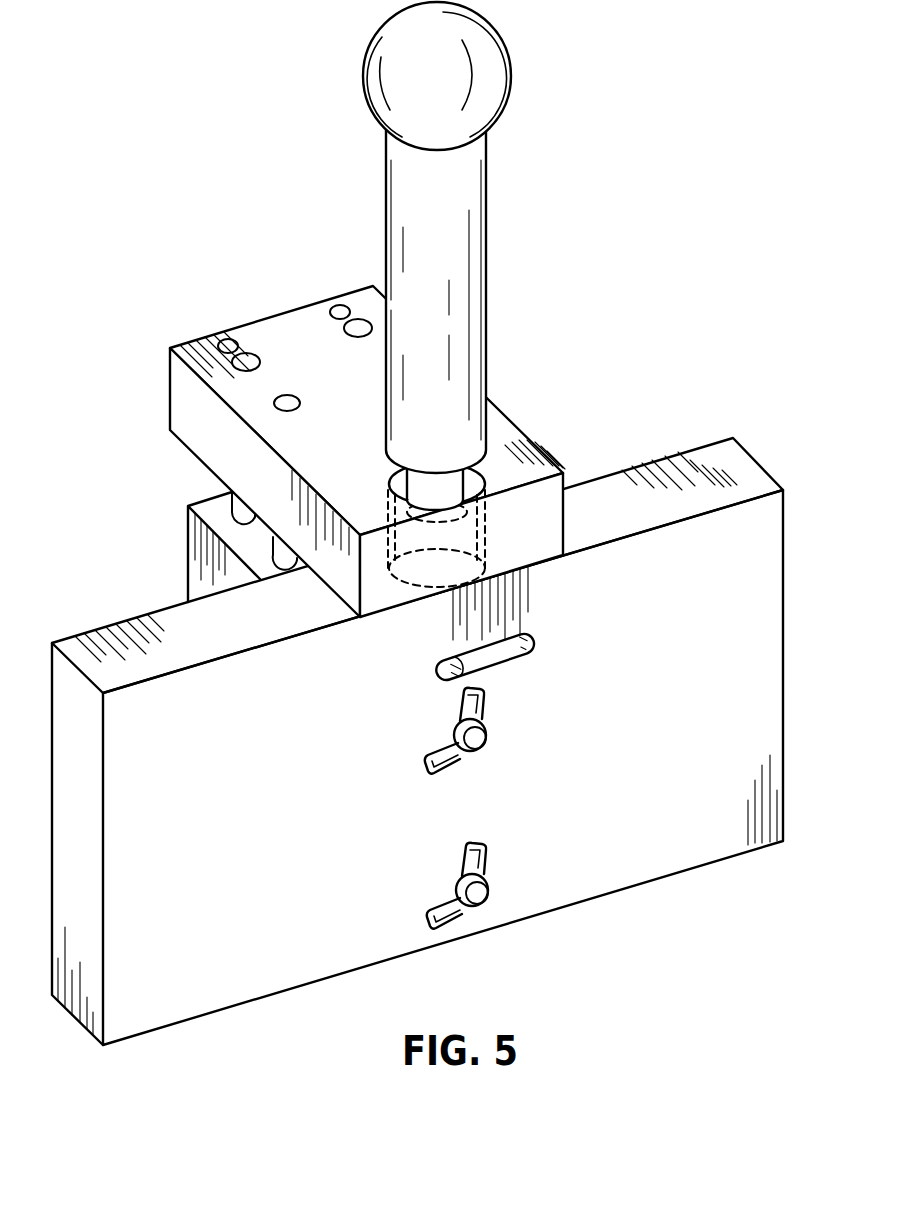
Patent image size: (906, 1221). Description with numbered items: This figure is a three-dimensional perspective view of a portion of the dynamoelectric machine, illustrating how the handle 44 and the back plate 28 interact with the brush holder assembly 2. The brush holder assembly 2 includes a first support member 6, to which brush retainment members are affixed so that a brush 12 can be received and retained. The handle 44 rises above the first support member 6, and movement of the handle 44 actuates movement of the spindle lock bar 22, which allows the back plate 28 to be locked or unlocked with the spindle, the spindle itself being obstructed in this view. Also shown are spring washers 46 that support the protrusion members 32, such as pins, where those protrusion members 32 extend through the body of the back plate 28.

The brush holder assembly 2 is at (178, 316).
The first support member 6 is at (183, 393).
The brush 12 is at (205, 552).
The spindle lock bar 22 is at (482, 660).
The back plate 28 is at (673, 684).
The protrusion member 32 is at (468, 908).
The handle 44 is at (462, 187).
The spring washer 46 is at (497, 885).